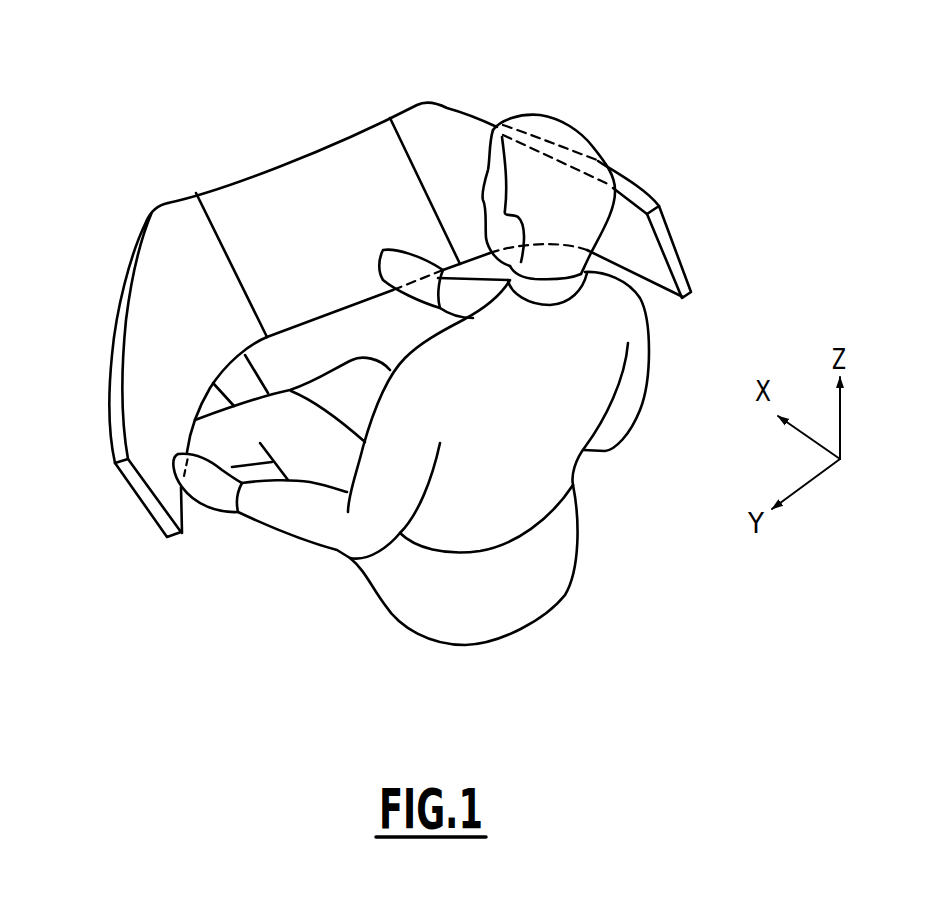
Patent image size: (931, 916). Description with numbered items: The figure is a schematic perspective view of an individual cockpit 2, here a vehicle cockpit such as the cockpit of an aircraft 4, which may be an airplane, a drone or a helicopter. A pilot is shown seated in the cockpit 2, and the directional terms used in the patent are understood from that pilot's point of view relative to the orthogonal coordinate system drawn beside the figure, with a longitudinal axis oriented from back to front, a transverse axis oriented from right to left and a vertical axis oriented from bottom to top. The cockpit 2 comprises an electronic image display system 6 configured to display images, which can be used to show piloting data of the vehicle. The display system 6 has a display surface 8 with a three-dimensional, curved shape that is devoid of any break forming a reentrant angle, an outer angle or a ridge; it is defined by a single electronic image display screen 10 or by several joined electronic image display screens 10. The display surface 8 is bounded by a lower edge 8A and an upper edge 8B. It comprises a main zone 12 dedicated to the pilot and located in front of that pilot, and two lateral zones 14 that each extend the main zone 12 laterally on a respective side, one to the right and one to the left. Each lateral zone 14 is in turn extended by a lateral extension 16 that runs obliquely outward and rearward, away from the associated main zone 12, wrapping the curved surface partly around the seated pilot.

The cockpit 2 is at (704, 164).
The aircraft 4 is at (600, 103).
The electronic image display system 6 is at (256, 130).
The display surface 8 is at (347, 190).
The lower edge 8A is at (323, 317).
The upper edge 8B is at (290, 163).
The electronic image display screen 10 is at (148, 292).
The main zone 12 is at (382, 153).
The lateral zone 14 is at (183, 242).
The lateral extension 16 is at (150, 427).